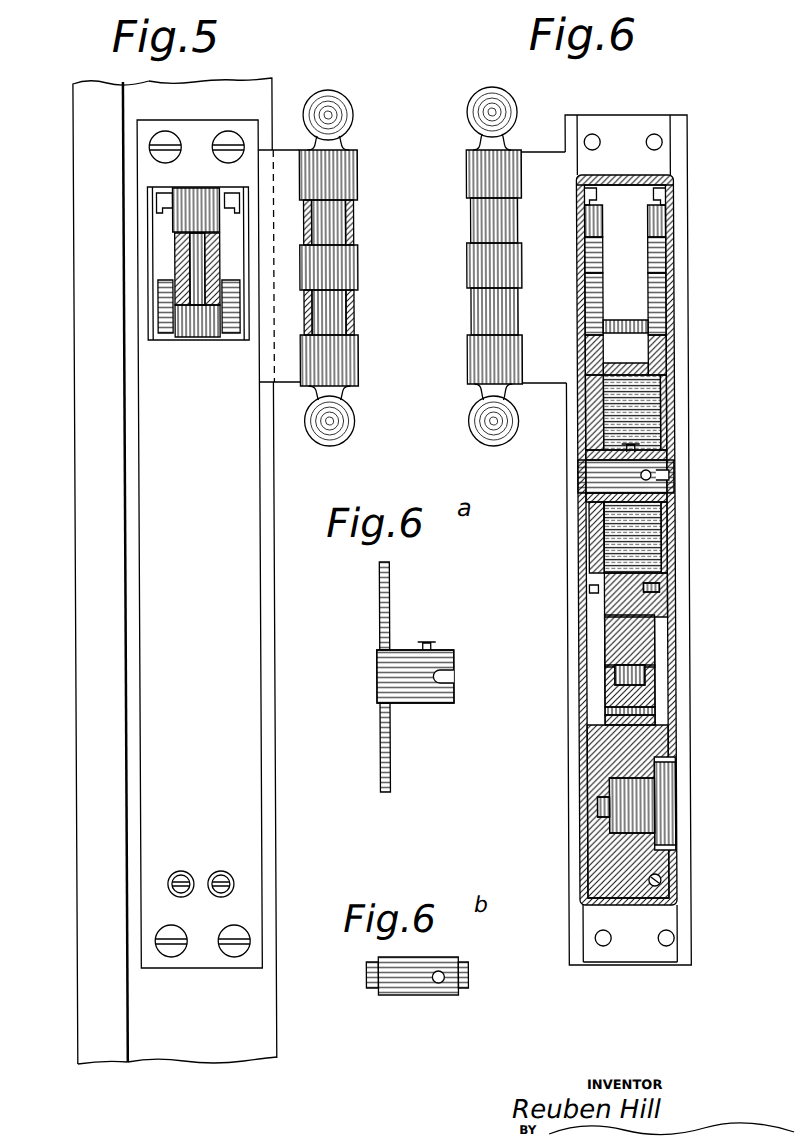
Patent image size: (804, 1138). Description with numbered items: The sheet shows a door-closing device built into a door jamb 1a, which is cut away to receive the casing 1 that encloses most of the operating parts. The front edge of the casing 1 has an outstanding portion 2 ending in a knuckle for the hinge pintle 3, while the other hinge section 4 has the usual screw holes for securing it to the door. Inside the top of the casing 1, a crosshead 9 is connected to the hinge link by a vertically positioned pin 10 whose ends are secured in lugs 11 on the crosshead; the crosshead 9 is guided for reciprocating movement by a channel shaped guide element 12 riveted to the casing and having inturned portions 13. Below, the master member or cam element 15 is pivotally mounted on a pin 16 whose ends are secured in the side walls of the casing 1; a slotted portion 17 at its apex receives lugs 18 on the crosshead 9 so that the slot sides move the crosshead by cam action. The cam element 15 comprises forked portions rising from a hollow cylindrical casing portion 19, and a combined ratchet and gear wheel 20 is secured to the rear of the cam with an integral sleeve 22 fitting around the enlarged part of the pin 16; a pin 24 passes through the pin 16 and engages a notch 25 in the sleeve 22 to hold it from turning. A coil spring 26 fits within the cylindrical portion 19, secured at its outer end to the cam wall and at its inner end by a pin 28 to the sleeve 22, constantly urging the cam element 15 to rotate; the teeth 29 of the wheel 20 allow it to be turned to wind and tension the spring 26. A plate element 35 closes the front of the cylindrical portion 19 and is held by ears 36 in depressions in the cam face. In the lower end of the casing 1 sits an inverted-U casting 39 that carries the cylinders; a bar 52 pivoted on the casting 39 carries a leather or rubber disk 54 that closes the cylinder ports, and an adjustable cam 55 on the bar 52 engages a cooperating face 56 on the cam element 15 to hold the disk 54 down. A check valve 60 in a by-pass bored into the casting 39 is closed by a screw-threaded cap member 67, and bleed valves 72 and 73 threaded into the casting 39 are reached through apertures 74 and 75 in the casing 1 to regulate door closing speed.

In FIG. 5, the casing 1 is at (237, 500).
In FIG. 6, the casing 1 is at (575, 325).
In FIG. 5, the door jamb 1a is at (88, 466).
In FIG. 5, the outstanding portion 2 is at (280, 170).
In FIG. 6, the outstanding portion 2 is at (534, 162).
In FIG. 5, the hinge pintle 3 is at (362, 88).
In FIG. 6, the hinge pintle 3 is at (512, 101).
In FIG. 5, the hinge section 4 is at (358, 207).
In FIG. 5, the crosshead 9 is at (165, 206).
In FIG. 6, the crosshead 9 is at (638, 224).
In FIG. 5, the pin 10 is at (196, 262).
In FIG. 5, the lugs 11 is at (192, 214).
In FIG. 5, the guide element 12 is at (256, 180).
In FIG. 6, the guide element 12 is at (657, 174).
In FIG. 6, the inturned portions 13 is at (660, 198).
In FIG. 5, the cam element 15 is at (232, 341).
In FIG. 6, the cam element 15 is at (657, 347).
In FIG. 6, the pin 16 is at (600, 472).
In FIG. 6B, the pin 16 is at (400, 987).
In FIG. 6, the slot 17 is at (662, 257).
In FIG. 5, the lugs 18 is at (228, 296).
In FIG. 6, the lugs 18 is at (660, 292).
In FIG. 6, the hollow cylindrical casing portion 19 is at (600, 553).
In FIG. 6, the combined ratchet and gear wheel 20 is at (590, 520).
In FIG. 6A, the combined ratchet and gear wheel 20 is at (388, 603).
In FIG. 6, the sleeve 22 is at (605, 455).
In FIG. 6A, the sleeve 22 is at (437, 700).
In FIG. 6, the pin 24 is at (650, 472).
In FIG. 6B, the pin 24 is at (442, 972).
In FIG. 6, the notch 25 is at (682, 482).
In FIG. 6A, the notch 25 is at (452, 677).
In FIG. 6, the coil spring 26 is at (648, 531).
In FIG. 6, the pin 28 is at (633, 443).
In FIG. 6A, the pin 28 is at (427, 638).
In FIG. 6, the teeth 29 is at (590, 589).
In FIG. 6A, the teeth 29 is at (382, 587).
In FIG. 6, the plate element 35 is at (663, 383).
In FIG. 6, the ears 36 is at (667, 554).
In FIG. 6, the casting 39 is at (603, 740).
In FIG. 6, the bar 52 is at (650, 678).
In FIG. 6, the disk 54 is at (653, 710).
In FIG. 6, the adjustable cam 55 is at (650, 632).
In FIG. 6, the cooperating face 56 is at (673, 613).
In FIG. 6, the check valve 60 is at (640, 803).
In FIG. 6, the cap member 67 is at (667, 800).
In FIG. 5, the bleed valve 72 is at (221, 898).
In FIG. 5, the bleed valve 73 is at (183, 888).
In FIG. 6, the bleed valve 73 is at (658, 877).
In FIG. 5, the aperture 74 is at (225, 875).
In FIG. 5, the aperture 75 is at (179, 871).